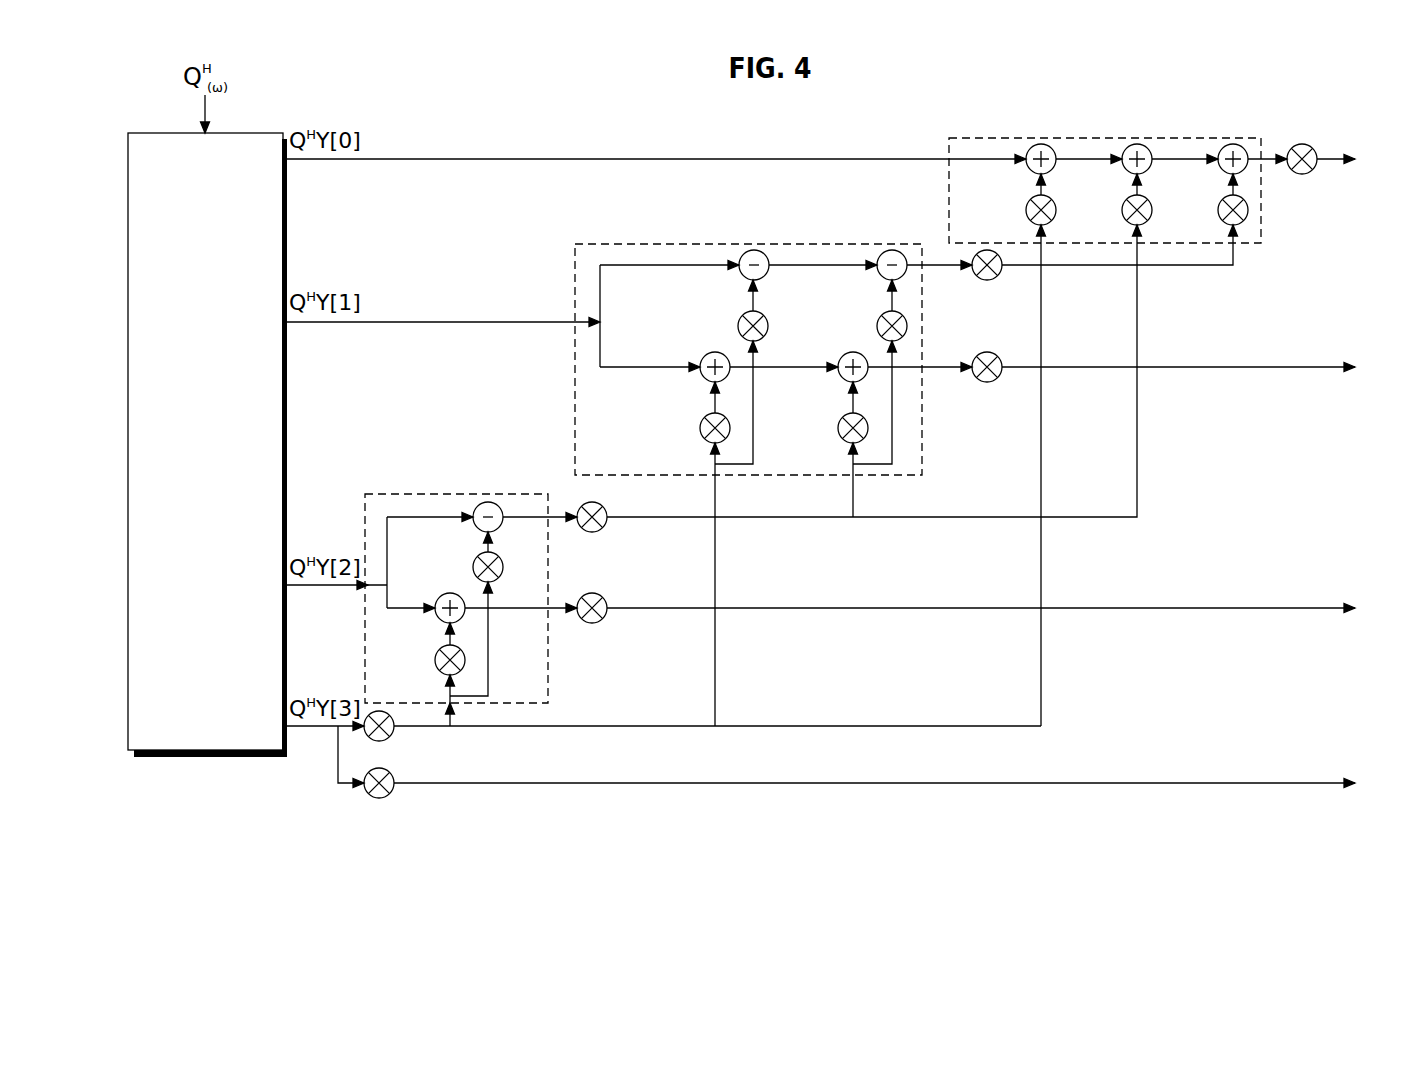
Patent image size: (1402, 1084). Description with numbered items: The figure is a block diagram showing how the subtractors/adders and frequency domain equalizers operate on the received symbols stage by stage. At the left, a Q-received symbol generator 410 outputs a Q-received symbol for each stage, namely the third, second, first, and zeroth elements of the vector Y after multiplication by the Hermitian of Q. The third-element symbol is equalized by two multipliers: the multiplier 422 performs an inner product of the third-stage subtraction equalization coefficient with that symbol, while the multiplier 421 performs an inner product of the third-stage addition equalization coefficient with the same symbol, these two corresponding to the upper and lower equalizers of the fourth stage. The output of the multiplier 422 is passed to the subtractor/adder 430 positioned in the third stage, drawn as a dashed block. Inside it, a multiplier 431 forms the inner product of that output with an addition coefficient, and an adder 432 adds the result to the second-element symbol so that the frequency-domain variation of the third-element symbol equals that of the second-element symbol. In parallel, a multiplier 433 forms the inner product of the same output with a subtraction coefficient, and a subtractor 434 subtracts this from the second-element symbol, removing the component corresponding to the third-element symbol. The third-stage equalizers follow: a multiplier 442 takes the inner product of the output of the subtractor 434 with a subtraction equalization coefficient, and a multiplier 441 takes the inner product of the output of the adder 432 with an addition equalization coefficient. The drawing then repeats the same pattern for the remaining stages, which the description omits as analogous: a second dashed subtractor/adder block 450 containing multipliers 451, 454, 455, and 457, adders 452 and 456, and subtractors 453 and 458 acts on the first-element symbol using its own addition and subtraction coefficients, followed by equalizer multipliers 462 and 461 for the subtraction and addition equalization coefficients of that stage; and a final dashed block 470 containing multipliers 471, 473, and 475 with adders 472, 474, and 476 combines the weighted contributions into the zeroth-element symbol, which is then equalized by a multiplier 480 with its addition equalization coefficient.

The Q-received symbol generator 410 is at (205, 758).
The multiplier 421 is at (366, 773).
The multiplier 422 is at (379, 711).
The subtractor/adder 430 is at (451, 492).
The multiplier 431 is at (465, 658).
The adder 432 is at (437, 598).
The multiplier 433 is at (505, 565).
The subtractor 434 is at (490, 500).
The multiplier 441 is at (606, 600).
The multiplier 442 is at (606, 510).
The second butterfly operation unit 450 is at (750, 242).
The AddW[1][3] multiplier 451 is at (728, 418).
The adder 452 is at (700, 360).
The subtractor 453 is at (757, 250).
The SubW[1][3] multiplier 454 is at (766, 318).
The AddW[1][2] multiplier 455 is at (868, 428).
The adder 456 is at (840, 360).
The SubW[1][2] multiplier 457 is at (907, 326).
The subtractor 458 is at (888, 250).
The FDE_AddW[1] multiplier 461 is at (992, 353).
The FDE_SubW[1] multiplier 462 is at (968, 258).
The third butterfly operation unit 470 is at (1105, 137).
The AddW[0][3] multiplier 471 is at (1050, 220).
The adder 472 is at (1038, 142).
The AddW[0][2] multiplier 473 is at (1145, 220).
The adder 474 is at (1137, 142).
The AddW[0][1] multiplier 475 is at (1248, 210).
The adder 476 is at (1228, 142).
The FDE_AddW[0] multiplier 480 is at (1302, 177).